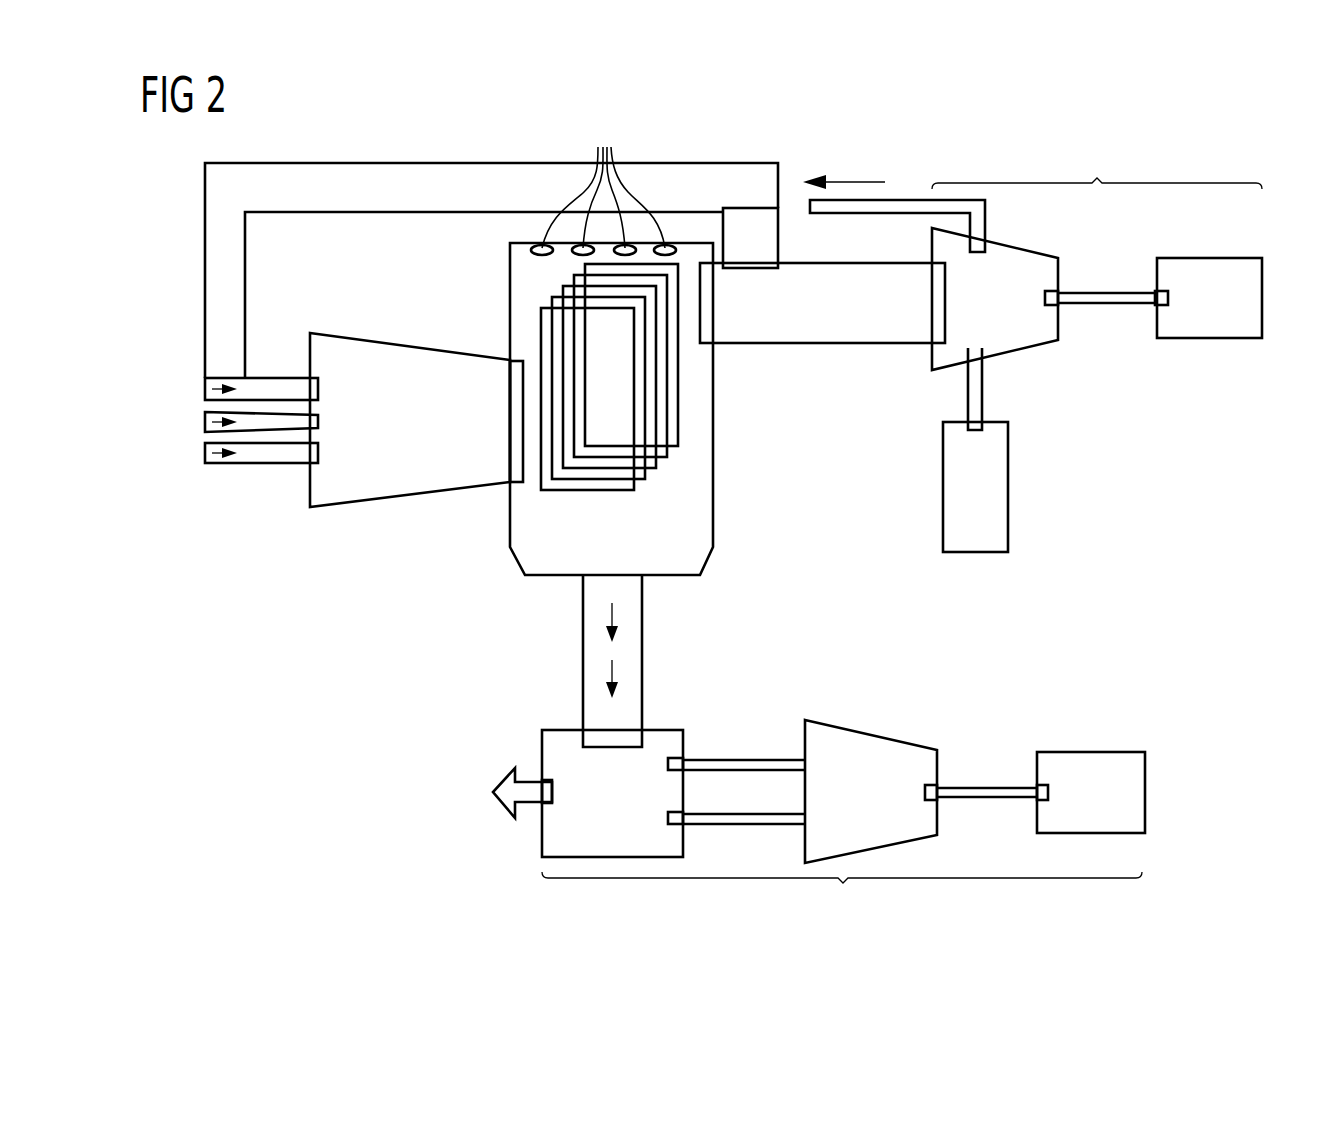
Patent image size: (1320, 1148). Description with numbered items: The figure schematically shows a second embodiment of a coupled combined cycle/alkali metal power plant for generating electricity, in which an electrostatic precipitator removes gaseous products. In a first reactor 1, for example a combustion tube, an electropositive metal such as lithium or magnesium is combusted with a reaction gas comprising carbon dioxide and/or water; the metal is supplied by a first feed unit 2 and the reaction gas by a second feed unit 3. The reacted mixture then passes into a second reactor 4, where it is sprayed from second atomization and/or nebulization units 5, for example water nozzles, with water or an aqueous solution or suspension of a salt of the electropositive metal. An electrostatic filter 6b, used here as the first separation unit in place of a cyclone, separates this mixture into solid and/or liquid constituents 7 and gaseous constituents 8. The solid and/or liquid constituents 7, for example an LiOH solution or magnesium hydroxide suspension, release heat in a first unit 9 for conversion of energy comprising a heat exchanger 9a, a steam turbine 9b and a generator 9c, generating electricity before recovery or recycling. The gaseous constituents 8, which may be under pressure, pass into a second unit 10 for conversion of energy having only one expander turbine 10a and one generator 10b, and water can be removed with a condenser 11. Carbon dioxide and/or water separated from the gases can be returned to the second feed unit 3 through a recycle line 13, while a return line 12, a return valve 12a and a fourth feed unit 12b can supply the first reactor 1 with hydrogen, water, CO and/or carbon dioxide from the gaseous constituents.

The first reactor 1 is at (347, 348).
The first feed unit 2 is at (210, 422).
The second feed unit 3 is at (210, 453).
The second reactor 4 is at (510, 310).
The second atomization units and/or nebulization units 5 is at (603, 181).
The electrostatic filter 6b is at (680, 400).
The solid and/or liquid constituents 7 is at (514, 793).
The gaseous constituents 8 is at (868, 333).
The first unit for conversion of energy 9 is at (842, 897).
The heat exchanger 9a is at (668, 730).
The steam turbine 9b is at (883, 748).
The generator 9c is at (1108, 762).
The second unit for conversion of energy 10 is at (1097, 166).
The expander turbine 10a is at (1023, 342).
The generator 10b is at (1218, 340).
The condenser 11 is at (1008, 478).
The return line 12 is at (388, 205).
The return valve 12a is at (778, 237).
The fourth feed unit 12b is at (210, 389).
The recycle line 13 is at (900, 205).